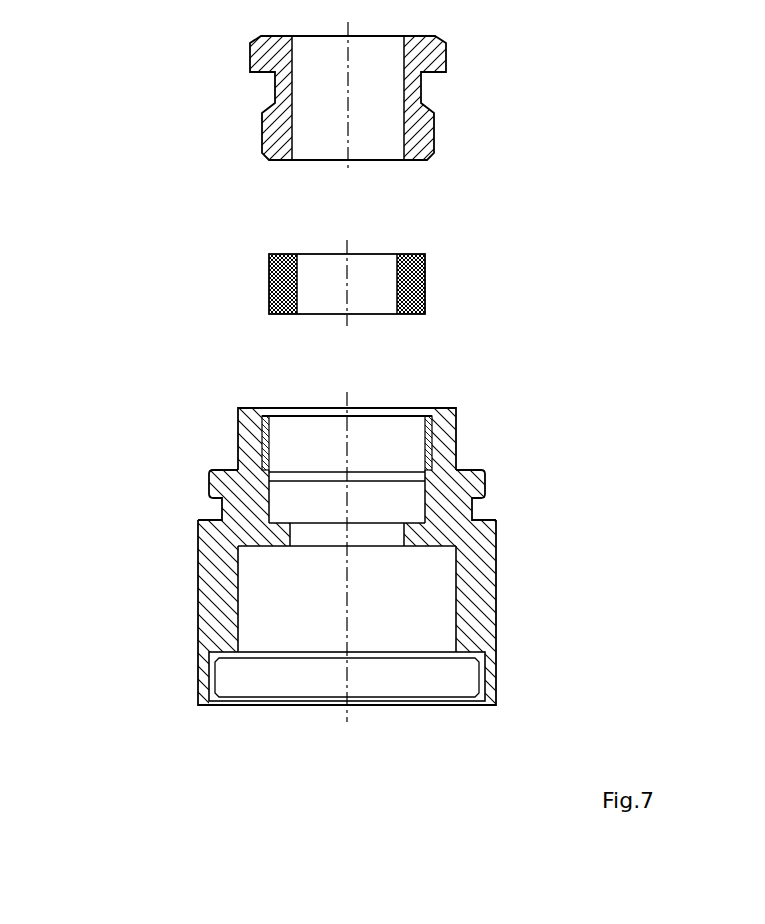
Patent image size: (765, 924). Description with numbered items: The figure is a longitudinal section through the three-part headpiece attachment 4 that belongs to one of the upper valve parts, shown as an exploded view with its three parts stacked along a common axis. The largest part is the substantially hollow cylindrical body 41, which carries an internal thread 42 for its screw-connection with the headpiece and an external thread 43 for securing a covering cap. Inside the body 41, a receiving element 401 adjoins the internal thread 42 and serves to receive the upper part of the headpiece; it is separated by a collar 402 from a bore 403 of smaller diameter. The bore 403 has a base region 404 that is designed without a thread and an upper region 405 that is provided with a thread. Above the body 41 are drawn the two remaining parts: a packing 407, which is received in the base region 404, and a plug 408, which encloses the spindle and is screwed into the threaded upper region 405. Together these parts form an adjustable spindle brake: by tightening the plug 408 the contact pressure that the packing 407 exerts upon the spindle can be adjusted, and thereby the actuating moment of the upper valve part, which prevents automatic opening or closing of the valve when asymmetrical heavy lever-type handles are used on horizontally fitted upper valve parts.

The headpiece attachment 4 is at (453, 488).
The hollow cylindrical body 41 is at (480, 596).
The internal thread 42 is at (490, 678).
The external thread 43 is at (487, 492).
The receiving element 401 is at (267, 625).
The collar 402 is at (288, 528).
The bore 403 is at (265, 470).
The base region 404 is at (300, 502).
The upper region 405 is at (240, 432).
The packing 407 is at (268, 283).
The plug 408 is at (267, 127).